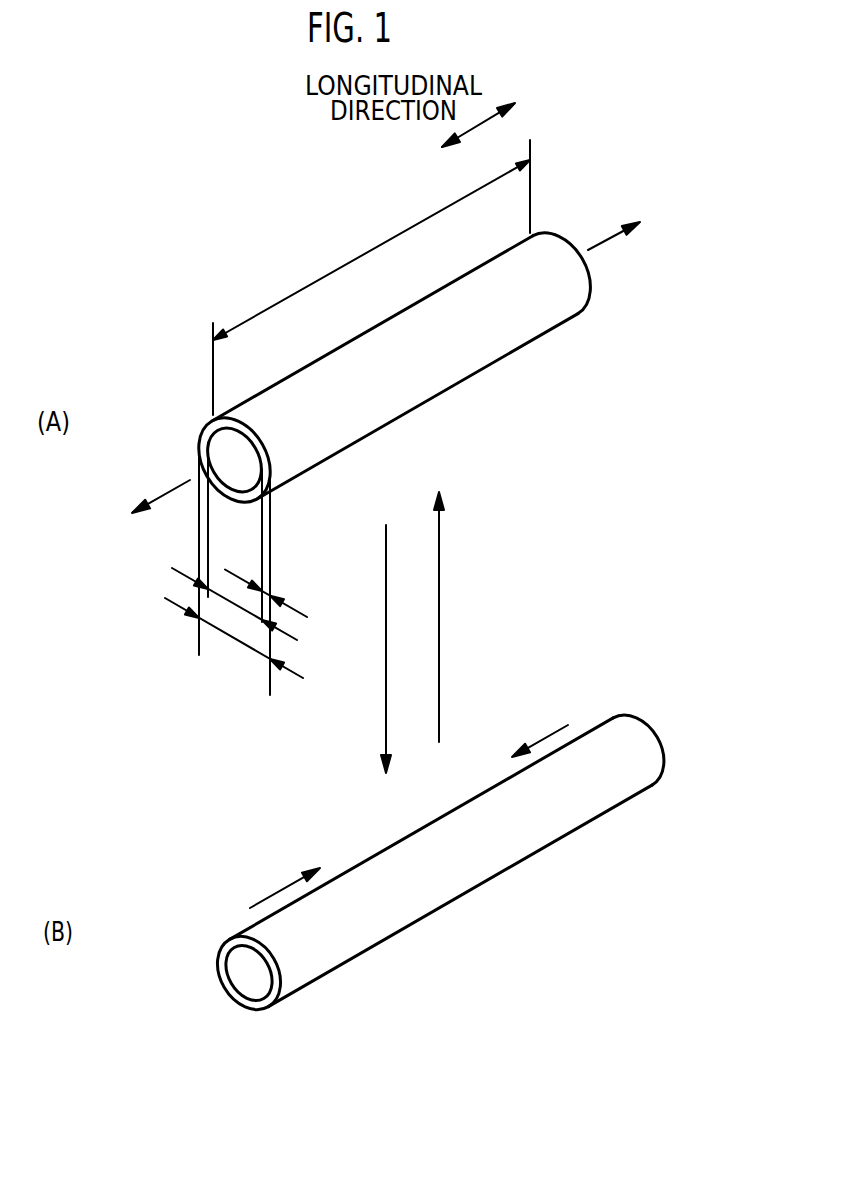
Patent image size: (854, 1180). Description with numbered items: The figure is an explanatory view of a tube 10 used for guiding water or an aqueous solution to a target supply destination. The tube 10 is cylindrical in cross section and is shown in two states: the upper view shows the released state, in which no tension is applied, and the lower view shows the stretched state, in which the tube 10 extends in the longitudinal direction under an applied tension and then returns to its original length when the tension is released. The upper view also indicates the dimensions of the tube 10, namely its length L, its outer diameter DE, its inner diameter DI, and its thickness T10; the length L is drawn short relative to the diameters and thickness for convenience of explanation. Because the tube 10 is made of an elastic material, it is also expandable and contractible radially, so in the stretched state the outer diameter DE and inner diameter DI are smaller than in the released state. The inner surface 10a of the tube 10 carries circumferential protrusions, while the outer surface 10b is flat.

The tube 10 is at (451, 627).
The inner surface 10a is at (218, 463).
The outer surface 10b is at (562, 295).
The length L is at (371, 277).
The inner diameter DI is at (219, 545).
The outer diameter DE is at (215, 571).
The thickness T10 is at (290, 601).